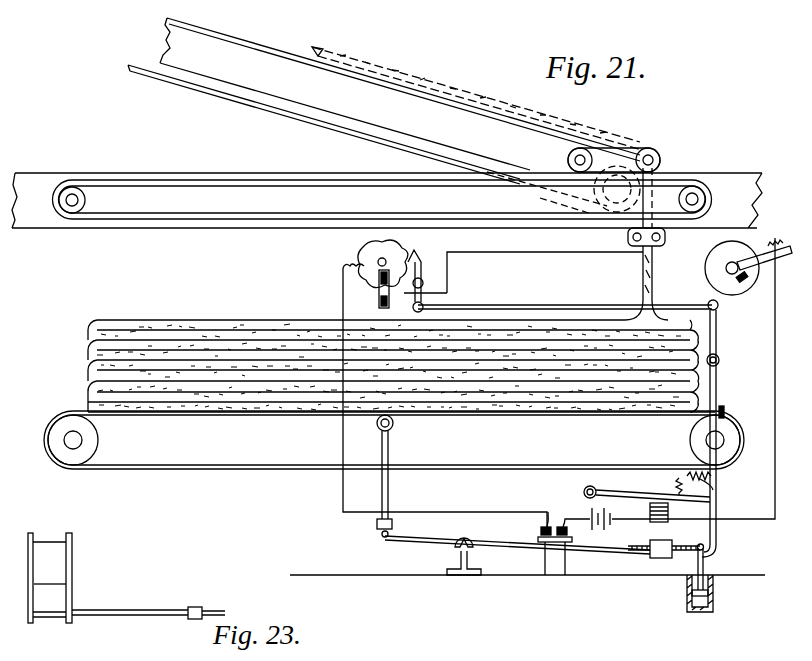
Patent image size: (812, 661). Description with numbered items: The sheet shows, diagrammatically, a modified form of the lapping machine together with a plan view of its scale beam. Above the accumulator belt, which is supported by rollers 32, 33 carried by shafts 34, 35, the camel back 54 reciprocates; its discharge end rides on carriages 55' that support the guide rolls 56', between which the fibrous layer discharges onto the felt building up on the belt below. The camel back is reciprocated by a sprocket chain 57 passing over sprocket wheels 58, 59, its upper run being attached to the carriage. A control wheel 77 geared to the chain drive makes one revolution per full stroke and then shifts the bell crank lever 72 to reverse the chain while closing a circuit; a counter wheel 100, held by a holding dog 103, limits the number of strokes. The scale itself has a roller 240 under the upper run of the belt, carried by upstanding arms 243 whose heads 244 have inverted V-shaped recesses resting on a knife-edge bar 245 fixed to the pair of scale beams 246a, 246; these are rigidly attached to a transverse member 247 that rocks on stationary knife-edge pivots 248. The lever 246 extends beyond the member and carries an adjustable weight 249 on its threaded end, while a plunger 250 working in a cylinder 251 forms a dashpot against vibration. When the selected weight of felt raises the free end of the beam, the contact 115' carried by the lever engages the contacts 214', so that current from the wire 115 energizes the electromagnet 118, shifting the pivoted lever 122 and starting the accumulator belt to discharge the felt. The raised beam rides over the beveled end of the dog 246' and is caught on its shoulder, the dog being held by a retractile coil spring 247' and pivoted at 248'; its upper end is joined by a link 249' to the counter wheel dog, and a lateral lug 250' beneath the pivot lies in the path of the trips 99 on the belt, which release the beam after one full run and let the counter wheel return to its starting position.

In FIG. 21, the camel back 54 is at (482, 107).
In FIG. 21, the carriages 55' is at (622, 144).
In FIG. 21, the guide rolls 56' is at (622, 241).
In FIG. 21, the sprocket chain 57 is at (165, 183).
In FIG. 21, the sprocket wheel 58 is at (74, 190).
In FIG. 21, the sprocket wheel 59 is at (705, 185).
In FIG. 21, the bell crank lever 72 is at (780, 247).
In FIG. 21, the control wheel 77 is at (735, 290).
In FIG. 21, the trips or lugs 99 is at (58, 467).
In FIG. 21, the counter wheel 100 is at (394, 247).
In FIG. 21, the holding dog 103 is at (424, 279).
In FIG. 21, the wire 115 is at (445, 397).
In FIG. 21, the contact 115' is at (579, 558).
In FIG. 21, the electromagnet 118 is at (669, 514).
In FIG. 21, the pivoted lever 122 is at (628, 492).
In FIG. 21, the contacts 214' is at (564, 515).
In FIG. 21, the roller 240 is at (395, 429).
In FIG. 21, the upstanding arms 243 is at (390, 489).
In FIG. 21, the heads 244 is at (376, 527).
In FIG. 21, the knife-edge bar 245 is at (380, 538).
In FIG. 23, the knife-edge bar 245 is at (66, 584).
In FIG. 21, the lever or scale beam 246 is at (517, 553).
In FIG. 23, the lever or scale beam 246 is at (130, 603).
In FIG. 21, the dog 246' is at (747, 428).
In FIG. 23, the lever or scale beam 246a is at (55, 535).
In FIG. 21, the transverse member 247 is at (485, 533).
In FIG. 23, the transverse member 247 is at (90, 578).
In FIG. 21, the retractile coil spring 247' is at (729, 489).
In FIG. 21, the stationary pivots 248 is at (481, 563).
In FIG. 21, the pivot 248' is at (736, 364).
In FIG. 21, the adjustable weight 249 is at (664, 538).
In FIG. 23, the adjustable weight 249 is at (206, 600).
In FIG. 21, the link 249' is at (562, 298).
In FIG. 21, the plunger 250 is at (726, 567).
In FIG. 21, the lug 250' is at (743, 399).
In FIG. 21, the cylinder 251 is at (686, 609).
In FIG. 21, the roller 32 is at (92, 447).
In FIG. 21, the roller 33 is at (690, 442).
In FIG. 21, the shaft 34 is at (62, 441).
In FIG. 21, the shaft 35 is at (728, 452).